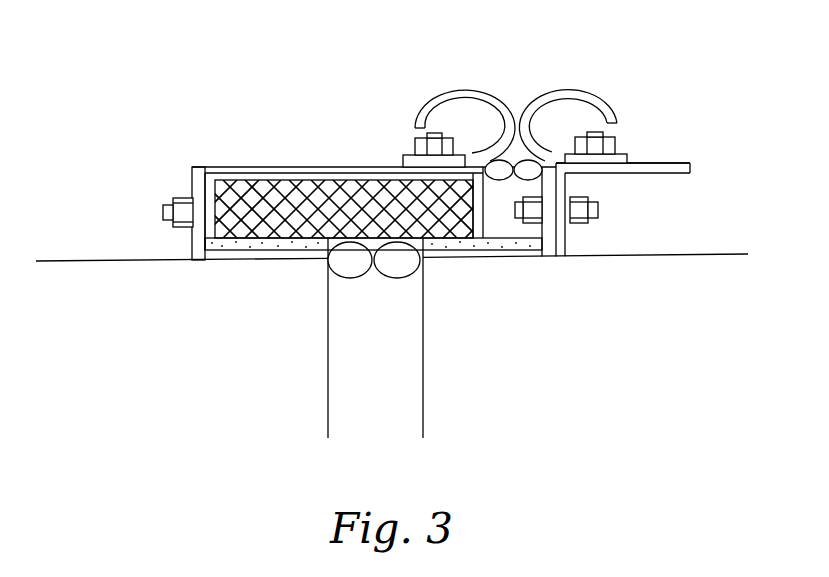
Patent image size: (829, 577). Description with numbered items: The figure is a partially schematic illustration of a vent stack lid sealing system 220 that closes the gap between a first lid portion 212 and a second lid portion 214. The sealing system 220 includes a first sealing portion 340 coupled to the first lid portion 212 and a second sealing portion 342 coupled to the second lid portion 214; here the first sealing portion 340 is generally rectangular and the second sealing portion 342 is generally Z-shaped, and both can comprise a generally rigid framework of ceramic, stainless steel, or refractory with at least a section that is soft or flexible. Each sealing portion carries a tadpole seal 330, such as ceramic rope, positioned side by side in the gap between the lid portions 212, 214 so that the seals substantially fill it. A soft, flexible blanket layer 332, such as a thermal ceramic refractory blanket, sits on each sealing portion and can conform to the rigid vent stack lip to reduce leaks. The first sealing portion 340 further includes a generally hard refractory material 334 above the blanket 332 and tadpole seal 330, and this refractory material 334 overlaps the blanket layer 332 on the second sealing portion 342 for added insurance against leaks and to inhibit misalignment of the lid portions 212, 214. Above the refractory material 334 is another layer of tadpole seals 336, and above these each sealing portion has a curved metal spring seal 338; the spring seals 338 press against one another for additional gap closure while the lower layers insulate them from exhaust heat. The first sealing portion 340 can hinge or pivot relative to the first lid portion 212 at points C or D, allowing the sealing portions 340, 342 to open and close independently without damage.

The first lid portion 212 is at (60, 260).
The second lid portion 214 is at (712, 253).
The vent stack lid sealing system 220 is at (722, 132).
The pivot point C is at (192, 259).
The pivot point D is at (192, 167).
The tadpole seal 330 is at (398, 278).
The blanket layer 332 is at (222, 250).
The refractory material 334 is at (290, 185).
The tadpole seals 336 is at (520, 162).
The spring seal 338 is at (435, 98).
The first sealing portion 340 is at (262, 155).
The second sealing portion 342 is at (592, 252).